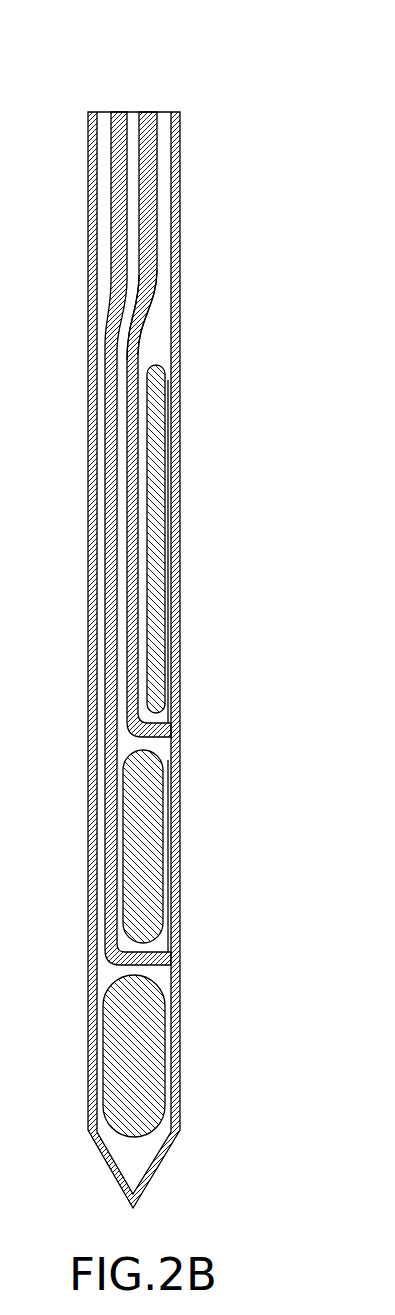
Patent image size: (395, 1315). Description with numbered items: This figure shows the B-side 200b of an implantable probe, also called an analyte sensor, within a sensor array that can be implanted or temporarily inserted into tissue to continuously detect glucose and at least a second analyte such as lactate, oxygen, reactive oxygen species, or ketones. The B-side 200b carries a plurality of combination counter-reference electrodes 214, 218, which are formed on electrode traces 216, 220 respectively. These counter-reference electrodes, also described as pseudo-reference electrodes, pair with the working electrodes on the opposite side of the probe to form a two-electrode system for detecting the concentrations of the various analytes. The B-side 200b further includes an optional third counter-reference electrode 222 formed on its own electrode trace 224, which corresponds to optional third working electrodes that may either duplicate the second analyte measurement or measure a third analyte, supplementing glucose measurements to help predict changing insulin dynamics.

The B-side 200b is at (143, 95).
The combination counter-reference electrode 214 is at (150, 1025).
The electrode trace 216 is at (160, 980).
The combination counter-reference electrode 218 is at (150, 795).
The electrode trace 220 is at (165, 742).
The third counter-reference electrode 222 is at (155, 520).
The electrode trace 224 is at (160, 327).